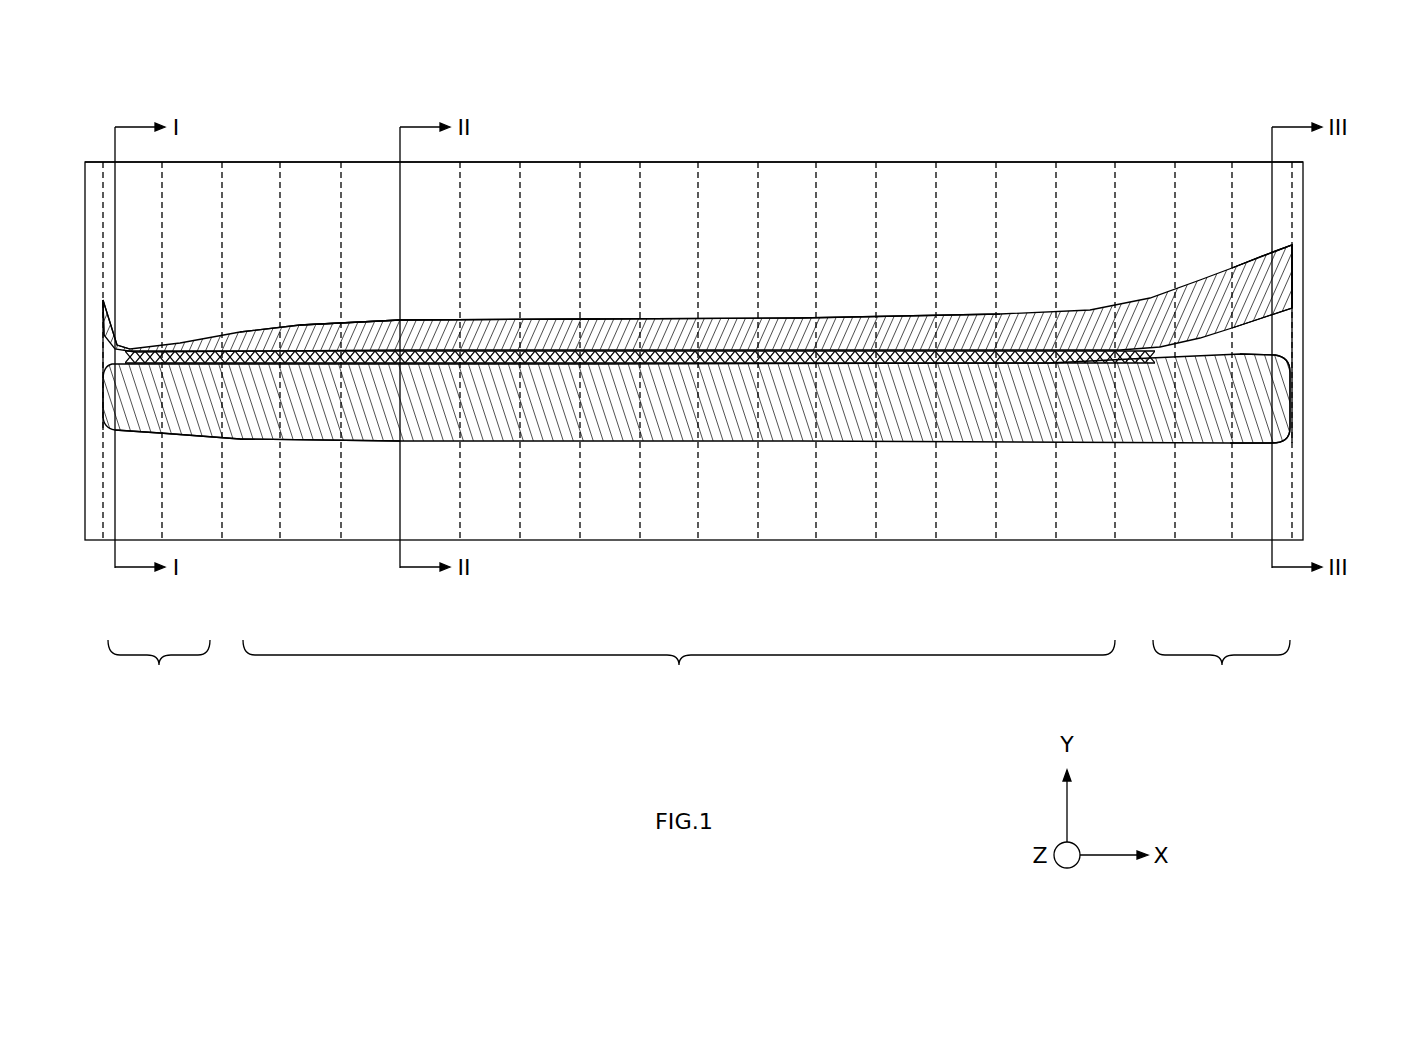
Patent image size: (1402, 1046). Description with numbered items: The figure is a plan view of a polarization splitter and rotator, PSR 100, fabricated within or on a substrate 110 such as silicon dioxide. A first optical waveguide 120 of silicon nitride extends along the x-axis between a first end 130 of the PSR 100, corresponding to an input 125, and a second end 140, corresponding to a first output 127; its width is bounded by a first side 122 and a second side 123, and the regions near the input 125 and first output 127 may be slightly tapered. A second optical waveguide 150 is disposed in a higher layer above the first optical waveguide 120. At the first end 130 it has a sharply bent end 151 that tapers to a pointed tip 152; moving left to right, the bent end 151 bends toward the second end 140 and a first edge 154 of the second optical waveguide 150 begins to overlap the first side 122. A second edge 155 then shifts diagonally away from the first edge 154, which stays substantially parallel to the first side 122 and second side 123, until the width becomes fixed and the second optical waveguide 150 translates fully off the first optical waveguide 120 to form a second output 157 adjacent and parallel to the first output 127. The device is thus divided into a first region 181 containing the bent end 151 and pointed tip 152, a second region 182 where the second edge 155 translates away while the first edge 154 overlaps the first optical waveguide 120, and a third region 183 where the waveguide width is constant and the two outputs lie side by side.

The polarization splitter and rotator (PSR) 100 is at (600, 120).
The substrate 110 is at (610, 520).
The first optical waveguide 120 is at (312, 432).
The first side 122 is at (360, 325).
The second side 123 is at (370, 440).
The input 125 is at (103, 395).
The first output 127 is at (1290, 388).
The first end 130 is at (88, 366).
The second end 140 is at (1312, 328).
The second optical waveguide 150 is at (315, 325).
The bent end 151 is at (118, 345).
The pointed tip 152 is at (100, 299).
The first edge 154 is at (715, 340).
The second edge 155 is at (660, 318).
The second output 157 is at (1292, 272).
The first region 181 is at (159, 669).
The second region 182 is at (679, 669).
The third region 183 is at (1221, 669).